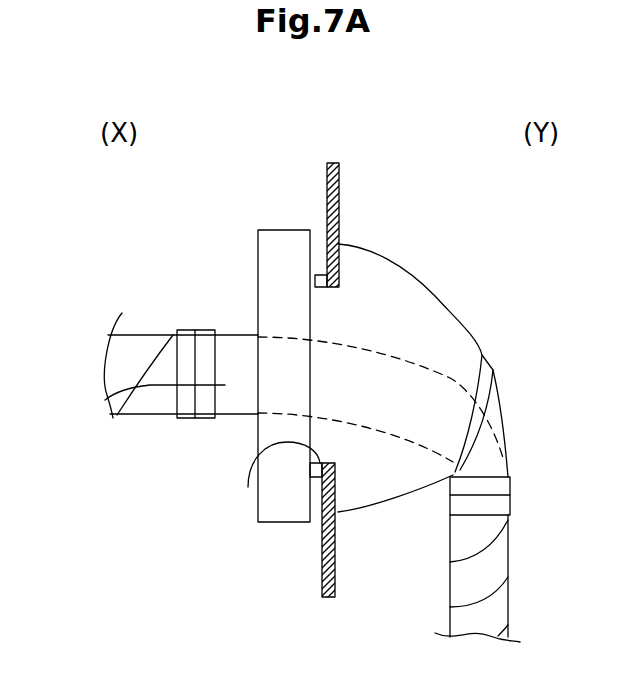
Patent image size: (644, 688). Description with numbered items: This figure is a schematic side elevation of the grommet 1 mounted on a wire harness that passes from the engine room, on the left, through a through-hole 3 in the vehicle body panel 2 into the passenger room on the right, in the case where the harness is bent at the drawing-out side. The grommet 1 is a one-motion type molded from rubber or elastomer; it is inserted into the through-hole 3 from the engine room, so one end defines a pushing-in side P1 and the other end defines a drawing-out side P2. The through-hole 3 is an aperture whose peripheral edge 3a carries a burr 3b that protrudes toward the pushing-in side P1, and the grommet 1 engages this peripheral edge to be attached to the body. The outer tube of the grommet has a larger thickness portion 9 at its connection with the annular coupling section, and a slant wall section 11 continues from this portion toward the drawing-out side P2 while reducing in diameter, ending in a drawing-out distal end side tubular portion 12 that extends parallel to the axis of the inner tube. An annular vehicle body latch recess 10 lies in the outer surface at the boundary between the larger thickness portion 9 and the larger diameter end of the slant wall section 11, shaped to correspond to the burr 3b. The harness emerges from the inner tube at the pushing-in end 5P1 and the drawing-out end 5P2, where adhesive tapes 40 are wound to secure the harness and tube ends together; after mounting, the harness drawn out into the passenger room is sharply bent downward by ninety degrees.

The grommet 1 is at (344, 389).
The vehicle body panel 2 is at (340, 210).
The through-hole 3 is at (248, 487).
The peripheral edge 3a is at (325, 290).
The burr 3b is at (318, 275).
The larger thickness portion 9 is at (258, 240).
The vehicle body latch recess 10 is at (318, 498).
The slant wall section 11 is at (463, 321).
The drawing-out distal end side tubular portion 12 is at (493, 368).
The adhesive tapes 40 is at (188, 330).
The pushing-in end 5P1 is at (105, 400).
The drawing-out end 5P2 is at (495, 448).
The pushing-in side P1 is at (240, 418).
The drawing-out side P2 is at (518, 457).